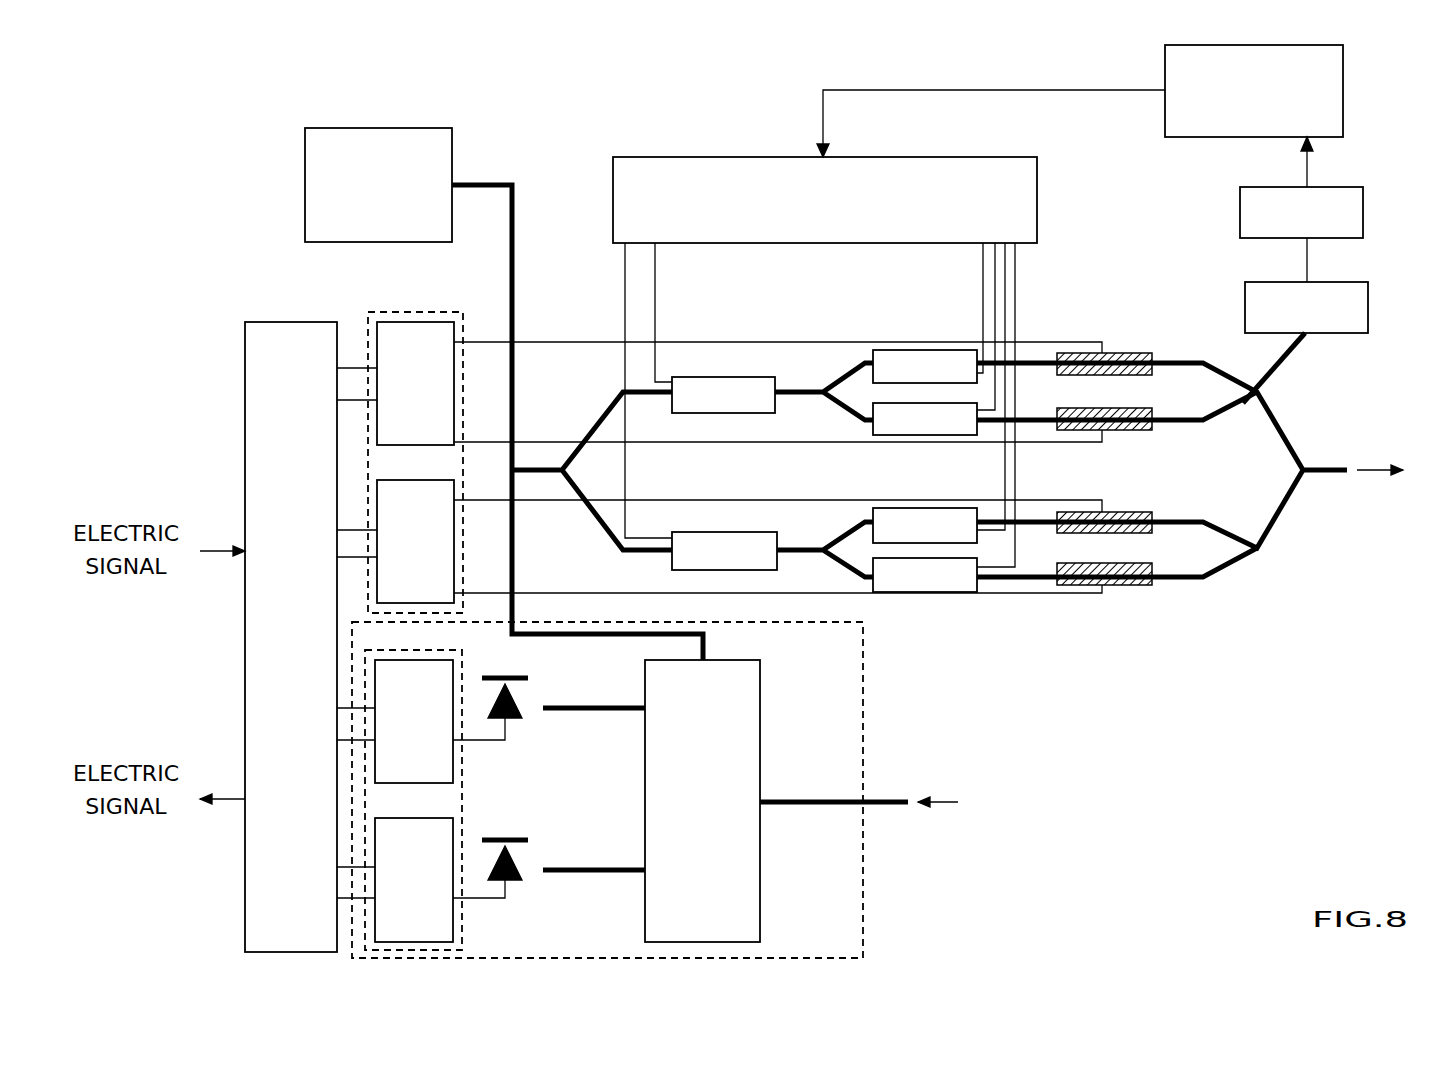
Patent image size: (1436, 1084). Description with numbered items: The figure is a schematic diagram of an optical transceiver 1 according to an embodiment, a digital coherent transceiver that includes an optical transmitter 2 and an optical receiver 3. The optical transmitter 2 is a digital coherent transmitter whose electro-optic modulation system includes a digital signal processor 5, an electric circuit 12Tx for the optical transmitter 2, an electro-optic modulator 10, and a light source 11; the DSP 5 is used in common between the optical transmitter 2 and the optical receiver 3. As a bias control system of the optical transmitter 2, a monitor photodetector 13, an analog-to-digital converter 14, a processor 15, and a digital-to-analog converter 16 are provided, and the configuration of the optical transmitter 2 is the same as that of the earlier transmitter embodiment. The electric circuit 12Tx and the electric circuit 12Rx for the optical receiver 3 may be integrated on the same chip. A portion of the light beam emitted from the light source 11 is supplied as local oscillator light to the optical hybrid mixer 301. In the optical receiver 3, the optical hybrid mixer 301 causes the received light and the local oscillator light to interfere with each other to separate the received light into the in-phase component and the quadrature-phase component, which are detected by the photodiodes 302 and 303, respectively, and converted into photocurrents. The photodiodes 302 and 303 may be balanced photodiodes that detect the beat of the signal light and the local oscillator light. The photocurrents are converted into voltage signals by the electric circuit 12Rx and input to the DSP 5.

The optical transceiver 1 is at (273, 82).
The optical transmitter 2 is at (719, 124).
The optical receiver 3 is at (814, 663).
The digital signal processor 5 is at (290, 322).
The electro-optic modulator 10 is at (762, 484).
The light source 11 is at (408, 129).
The electric circuit for the optical transmitter 12Tx is at (404, 313).
The electric circuit for the optical receiver 12Rx is at (462, 942).
The monitor photodetector 13 is at (1318, 282).
The analog-to-digital converter 14 is at (1312, 187).
The processor 15 is at (1343, 84).
The digital-to-analog converter 16 is at (940, 157).
The optical hybrid mixer 301 is at (760, 750).
The photodiode 302 is at (522, 695).
The photodiode 303 is at (520, 857).